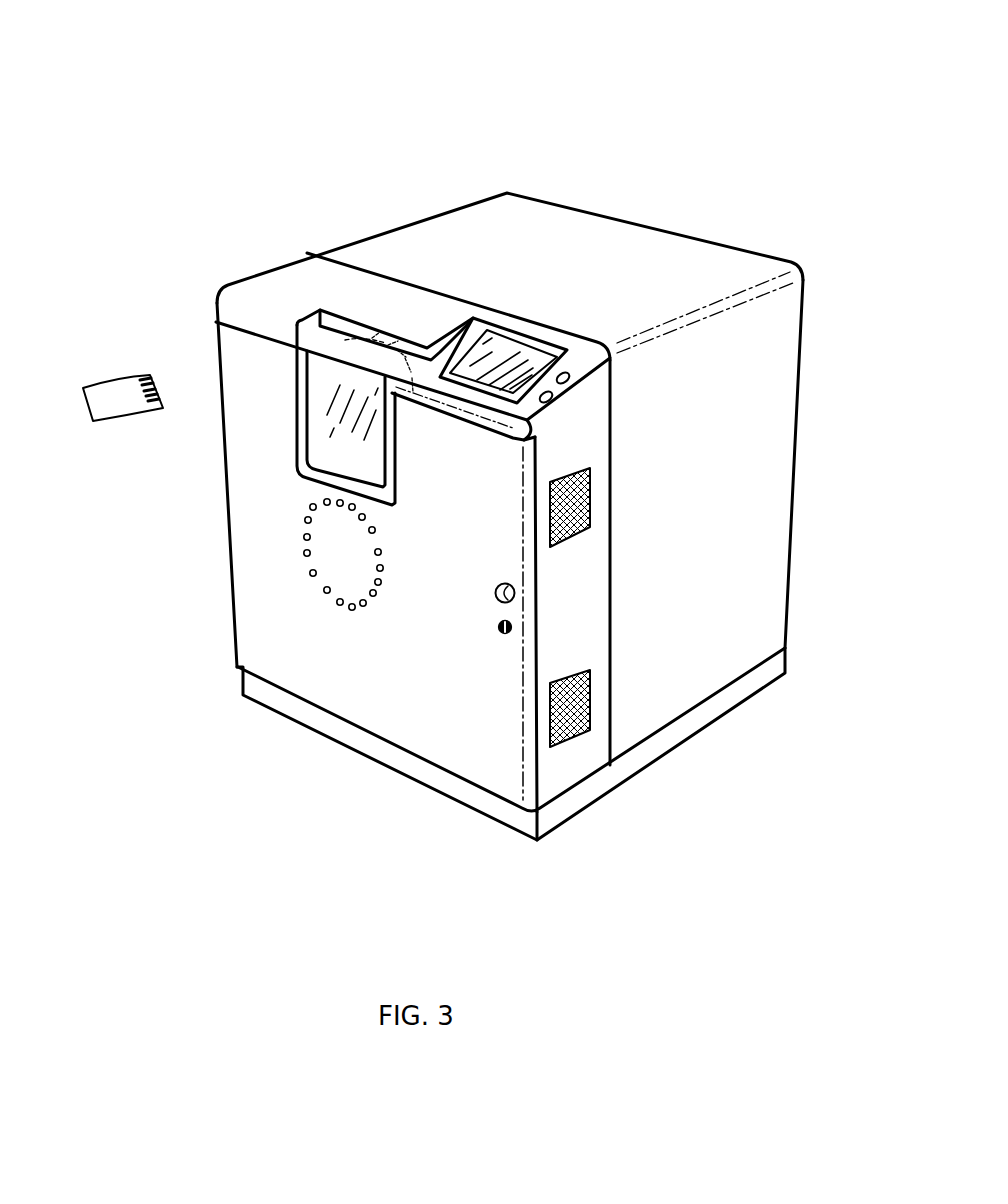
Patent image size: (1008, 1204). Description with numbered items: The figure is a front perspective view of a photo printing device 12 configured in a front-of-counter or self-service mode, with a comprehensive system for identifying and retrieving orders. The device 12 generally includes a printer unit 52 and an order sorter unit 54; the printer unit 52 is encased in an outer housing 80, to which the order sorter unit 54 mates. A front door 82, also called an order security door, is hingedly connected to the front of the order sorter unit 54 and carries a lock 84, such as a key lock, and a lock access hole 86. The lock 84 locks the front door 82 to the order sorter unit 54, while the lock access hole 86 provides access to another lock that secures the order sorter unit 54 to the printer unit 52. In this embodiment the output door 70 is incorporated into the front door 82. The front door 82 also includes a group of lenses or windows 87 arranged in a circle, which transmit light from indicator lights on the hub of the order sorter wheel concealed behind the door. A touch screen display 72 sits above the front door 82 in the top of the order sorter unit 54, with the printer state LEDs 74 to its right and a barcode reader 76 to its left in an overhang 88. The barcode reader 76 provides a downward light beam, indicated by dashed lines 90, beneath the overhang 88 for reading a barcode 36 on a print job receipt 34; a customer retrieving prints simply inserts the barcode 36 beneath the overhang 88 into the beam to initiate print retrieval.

The photo printing device 12 is at (331, 72).
The print job receipt 34 is at (340, 372).
The barcode 36 is at (150, 410).
The printer unit 52 is at (783, 452).
The order sorter unit 54 is at (608, 592).
The output door 70 is at (320, 428).
The touch screen display 72 is at (500, 340).
The printer state LEDs 74 is at (553, 396).
The barcode reader 76 is at (393, 337).
The outer housing 80 is at (670, 272).
The front door 82 is at (238, 601).
The lock 84 is at (500, 634).
The lock access hole 86 is at (494, 592).
The lenses or windows 87 is at (340, 606).
The overhang 88 is at (372, 312).
The dashed lines 90 is at (396, 346).